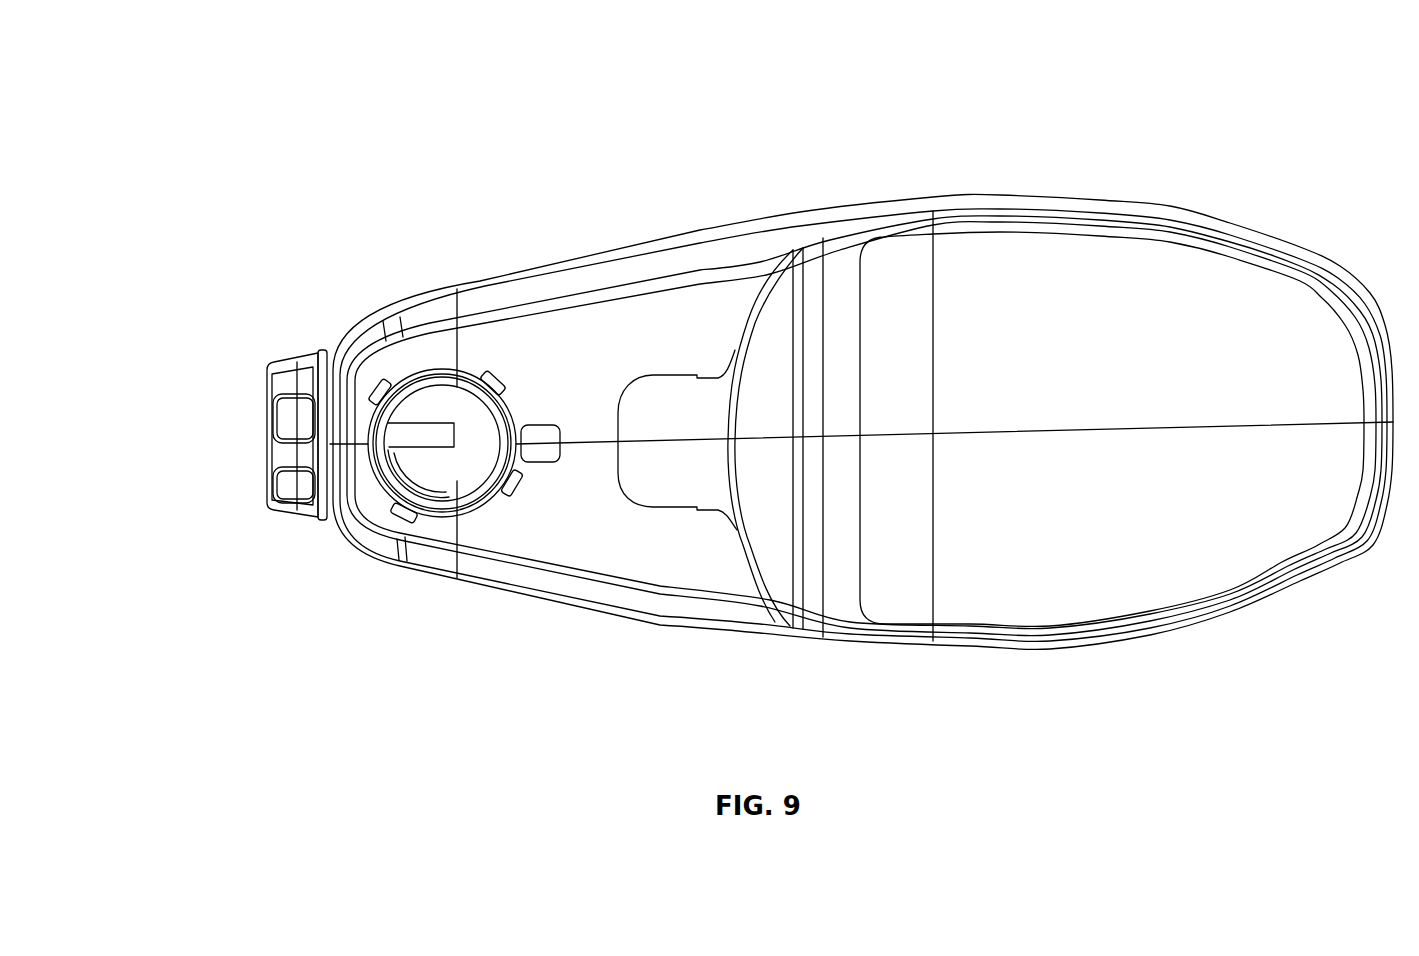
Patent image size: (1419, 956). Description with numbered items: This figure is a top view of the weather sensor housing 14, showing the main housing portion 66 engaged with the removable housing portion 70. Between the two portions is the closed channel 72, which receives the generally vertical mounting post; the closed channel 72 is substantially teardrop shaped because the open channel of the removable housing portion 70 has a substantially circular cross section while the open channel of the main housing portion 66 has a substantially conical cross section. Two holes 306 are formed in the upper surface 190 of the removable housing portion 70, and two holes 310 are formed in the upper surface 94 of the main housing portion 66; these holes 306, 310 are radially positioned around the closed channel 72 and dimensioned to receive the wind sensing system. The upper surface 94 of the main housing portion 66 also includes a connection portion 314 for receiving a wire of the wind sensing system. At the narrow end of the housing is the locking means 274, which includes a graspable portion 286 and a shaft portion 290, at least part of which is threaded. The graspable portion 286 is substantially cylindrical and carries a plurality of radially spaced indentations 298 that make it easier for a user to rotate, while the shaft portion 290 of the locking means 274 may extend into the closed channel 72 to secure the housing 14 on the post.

The housing 14 is at (830, 105).
The main housing portion 66 is at (1148, 218).
The removable housing portion 70 is at (418, 316).
The closed channel 72 is at (471, 477).
The upper surface 94 is at (708, 582).
The upper surface 190 is at (437, 557).
The locking means 274 is at (232, 440).
The graspable portion 286 is at (266, 388).
The shaft portion 290 is at (413, 440).
The radially spaced indentations 298 is at (298, 357).
The holes 306 is at (379, 386).
The holes 310 is at (494, 378).
The connection portion 314 is at (542, 426).